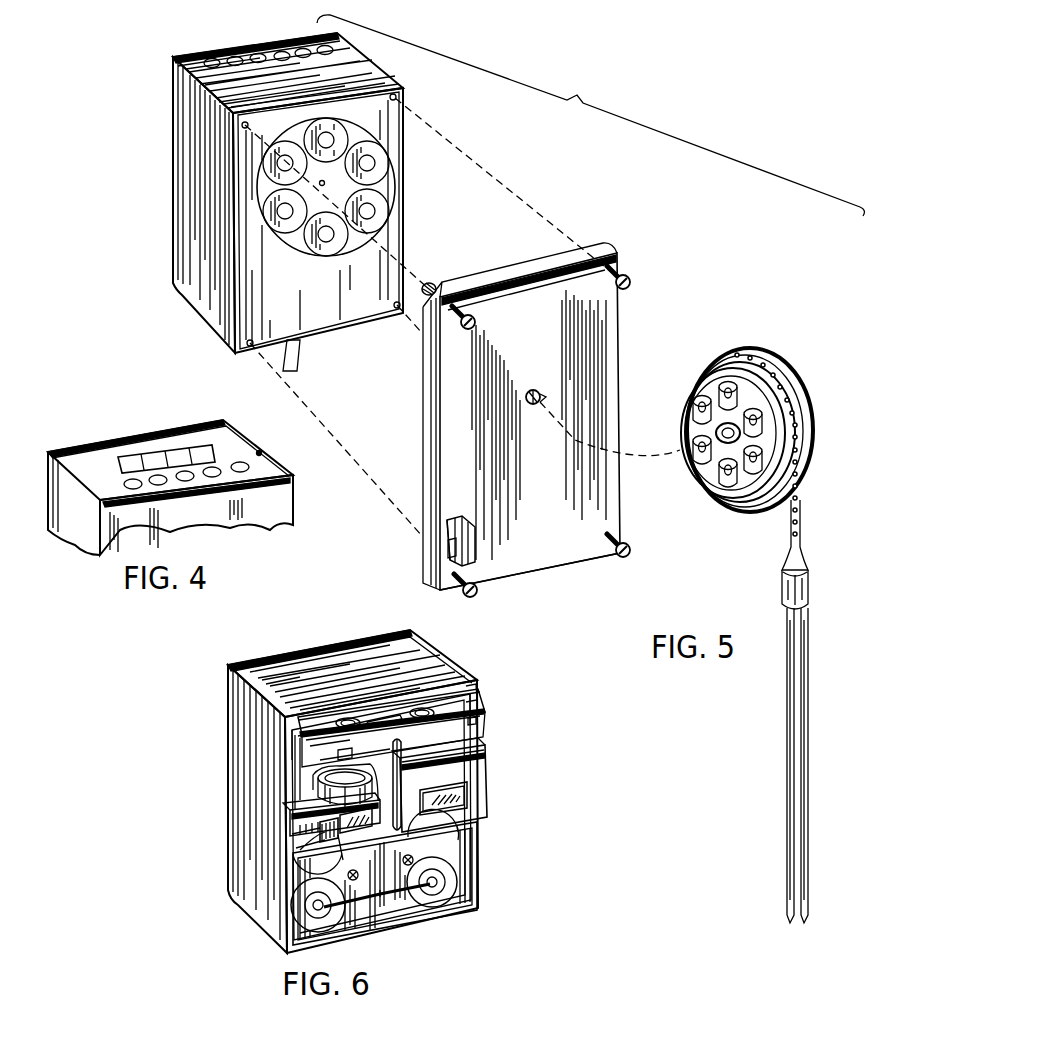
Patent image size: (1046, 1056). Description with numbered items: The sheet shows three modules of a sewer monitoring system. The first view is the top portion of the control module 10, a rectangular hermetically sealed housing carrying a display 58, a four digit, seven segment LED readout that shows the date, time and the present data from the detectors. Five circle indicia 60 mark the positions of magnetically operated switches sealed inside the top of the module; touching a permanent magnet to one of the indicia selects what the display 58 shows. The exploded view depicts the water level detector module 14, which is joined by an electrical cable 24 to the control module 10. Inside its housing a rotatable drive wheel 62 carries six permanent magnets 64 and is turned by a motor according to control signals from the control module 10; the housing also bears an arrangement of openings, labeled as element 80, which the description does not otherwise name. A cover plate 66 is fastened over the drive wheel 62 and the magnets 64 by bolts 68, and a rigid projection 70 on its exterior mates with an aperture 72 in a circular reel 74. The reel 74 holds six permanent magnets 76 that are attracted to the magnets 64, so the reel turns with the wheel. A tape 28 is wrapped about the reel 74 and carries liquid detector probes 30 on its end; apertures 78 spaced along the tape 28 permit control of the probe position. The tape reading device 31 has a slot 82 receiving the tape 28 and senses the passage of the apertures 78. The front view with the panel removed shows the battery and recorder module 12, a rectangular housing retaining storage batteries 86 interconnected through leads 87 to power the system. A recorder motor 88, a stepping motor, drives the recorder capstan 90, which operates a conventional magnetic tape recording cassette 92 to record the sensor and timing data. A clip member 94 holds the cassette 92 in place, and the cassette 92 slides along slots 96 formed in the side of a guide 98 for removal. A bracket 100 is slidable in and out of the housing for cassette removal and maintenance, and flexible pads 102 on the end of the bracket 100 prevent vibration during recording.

In FIG. 4, the control module 10 is at (243, 523).
In FIG. 6, the battery and recorder module 12 is at (343, 665).
In FIG. 5, the water level detector module 14 is at (185, 95).
In FIG. 5, the electrical cable 24 is at (303, 348).
In FIG. 5, the tape 28 is at (800, 497).
In FIG. 5, the liquid detector probes 30 is at (800, 683).
In FIG. 5, the tape reading device 31 is at (452, 549).
In FIG. 4, the display 58 is at (147, 447).
In FIG. 4, the circle indicia 60 is at (260, 450).
In FIG. 5, the drive wheel 62 is at (404, 107).
In FIG. 5, the permanent magnets 64 is at (389, 166).
In FIG. 5, the cover plate 66 is at (590, 250).
In FIG. 5, the bolts 68 is at (617, 283).
In FIG. 5, the rigid projection 70 is at (542, 398).
In FIG. 5, the aperture 72 is at (690, 403).
In FIG. 5, the reel 74 is at (785, 368).
In FIG. 5, the permanent magnets 76 is at (740, 490).
In FIG. 5, the apertures 78 is at (800, 402).
In FIG. 5, the top openings 80 is at (240, 40).
In FIG. 5, the slot 82 is at (458, 520).
In FIG. 6, the storage batteries 86 is at (470, 850).
In FIG. 6, the leads 87 is at (388, 895).
In FIG. 6, the recorder motor 88 is at (323, 773).
In FIG. 6, the recorder capstan 90 is at (340, 797).
In FIG. 6, the magnetic tape recording cassette 92 is at (484, 714).
In FIG. 6, the clip member 94 is at (405, 766).
In FIG. 6, the slots 96 is at (293, 733).
In FIG. 6, the guide 98 is at (292, 747).
In FIG. 6, the bracket 100 is at (487, 773).
In FIG. 6, the flexible pads 102 is at (468, 793).